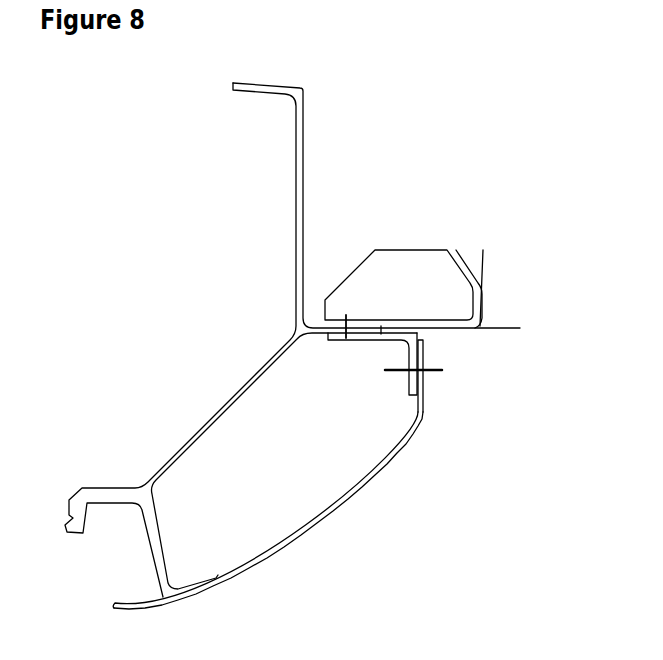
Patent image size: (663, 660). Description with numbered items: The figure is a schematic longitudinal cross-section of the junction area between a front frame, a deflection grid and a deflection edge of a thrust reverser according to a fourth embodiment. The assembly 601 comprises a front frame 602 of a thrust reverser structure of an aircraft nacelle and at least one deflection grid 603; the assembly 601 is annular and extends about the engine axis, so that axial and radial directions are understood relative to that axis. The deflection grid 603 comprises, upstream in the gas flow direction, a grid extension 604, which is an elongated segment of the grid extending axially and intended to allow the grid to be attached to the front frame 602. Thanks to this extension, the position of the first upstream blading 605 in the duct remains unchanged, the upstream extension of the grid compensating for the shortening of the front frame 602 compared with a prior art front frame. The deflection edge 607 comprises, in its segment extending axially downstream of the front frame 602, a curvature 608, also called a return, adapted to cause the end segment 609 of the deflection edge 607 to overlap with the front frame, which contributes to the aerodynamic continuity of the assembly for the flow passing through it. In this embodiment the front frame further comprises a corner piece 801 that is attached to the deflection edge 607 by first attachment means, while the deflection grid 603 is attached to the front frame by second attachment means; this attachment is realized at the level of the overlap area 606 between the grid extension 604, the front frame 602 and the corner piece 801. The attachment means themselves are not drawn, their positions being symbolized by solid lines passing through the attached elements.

The assembly 601 is at (469, 98).
The front frame 602 is at (233, 398).
The deflection grid 603 is at (500, 250).
The grid extension 604 is at (345, 315).
The first upstream blading 605 is at (487, 305).
The overlap area 606 is at (376, 238).
The deflection edge 607 is at (327, 522).
The curvature 608 is at (420, 418).
The end segment of the deflection edge 609 is at (423, 378).
The corner piece 801 is at (407, 380).